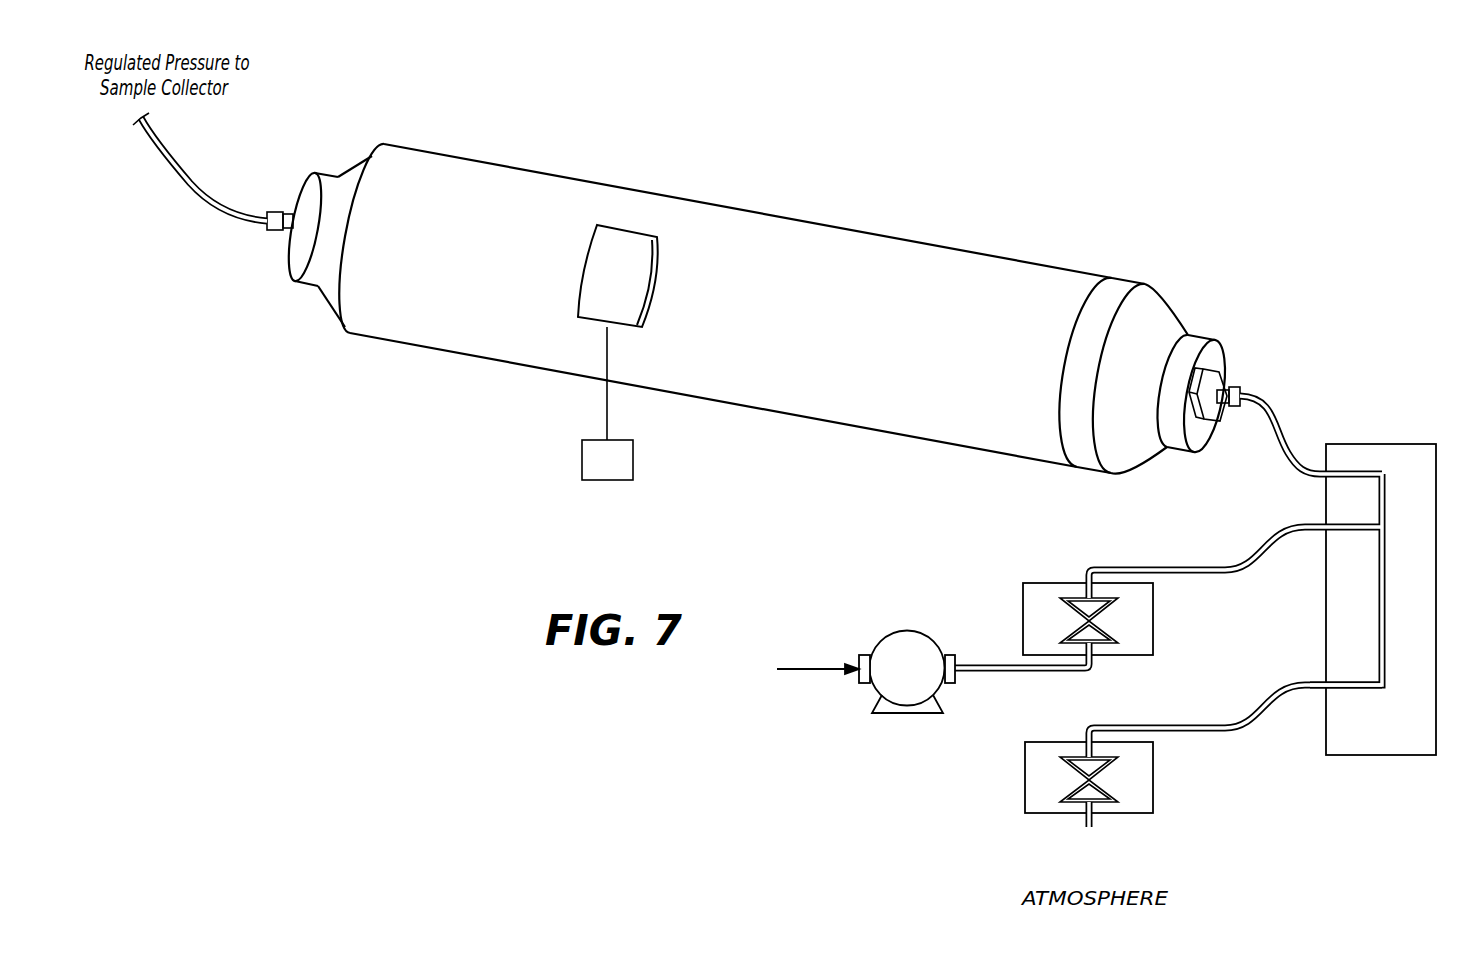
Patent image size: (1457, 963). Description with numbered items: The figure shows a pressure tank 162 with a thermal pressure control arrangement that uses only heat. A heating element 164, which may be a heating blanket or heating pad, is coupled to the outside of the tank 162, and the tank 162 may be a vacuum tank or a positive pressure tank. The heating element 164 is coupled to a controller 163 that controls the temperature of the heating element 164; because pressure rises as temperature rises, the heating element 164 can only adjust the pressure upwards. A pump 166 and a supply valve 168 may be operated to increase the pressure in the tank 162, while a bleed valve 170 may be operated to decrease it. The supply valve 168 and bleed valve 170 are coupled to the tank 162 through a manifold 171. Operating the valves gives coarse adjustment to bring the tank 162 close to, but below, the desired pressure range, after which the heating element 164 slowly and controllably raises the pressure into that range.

The pressure tank 162 is at (860, 265).
The controller 163 is at (624, 473).
The heating element 164 is at (622, 265).
The pump 166 is at (906, 700).
The supply valve 168 is at (1042, 593).
The bleed valve 170 is at (1042, 807).
The manifold 171 is at (1382, 448).